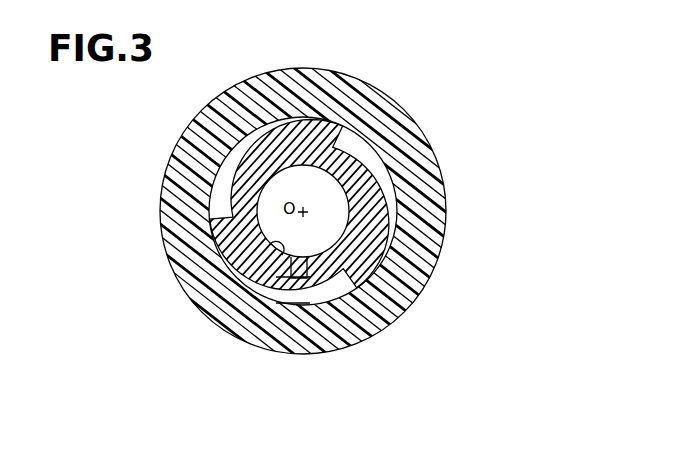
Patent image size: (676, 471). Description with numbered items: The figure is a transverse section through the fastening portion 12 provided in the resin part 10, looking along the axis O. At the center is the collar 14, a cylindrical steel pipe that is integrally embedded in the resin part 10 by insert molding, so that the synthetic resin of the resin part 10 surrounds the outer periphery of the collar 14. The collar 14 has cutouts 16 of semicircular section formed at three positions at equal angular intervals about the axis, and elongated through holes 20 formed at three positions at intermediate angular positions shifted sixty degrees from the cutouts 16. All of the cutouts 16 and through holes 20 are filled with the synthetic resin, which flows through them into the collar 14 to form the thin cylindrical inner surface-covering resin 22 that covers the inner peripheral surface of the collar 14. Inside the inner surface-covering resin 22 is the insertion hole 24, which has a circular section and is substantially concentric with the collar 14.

The resin part 10 is at (193, 122).
The fastening portion 12 is at (400, 127).
The collar 14 is at (304, 118).
The cutouts 16 is at (271, 134).
The through holes 20 is at (350, 133).
The inner surface-covering resin 22 is at (264, 250).
The insertion hole 24 is at (297, 258).